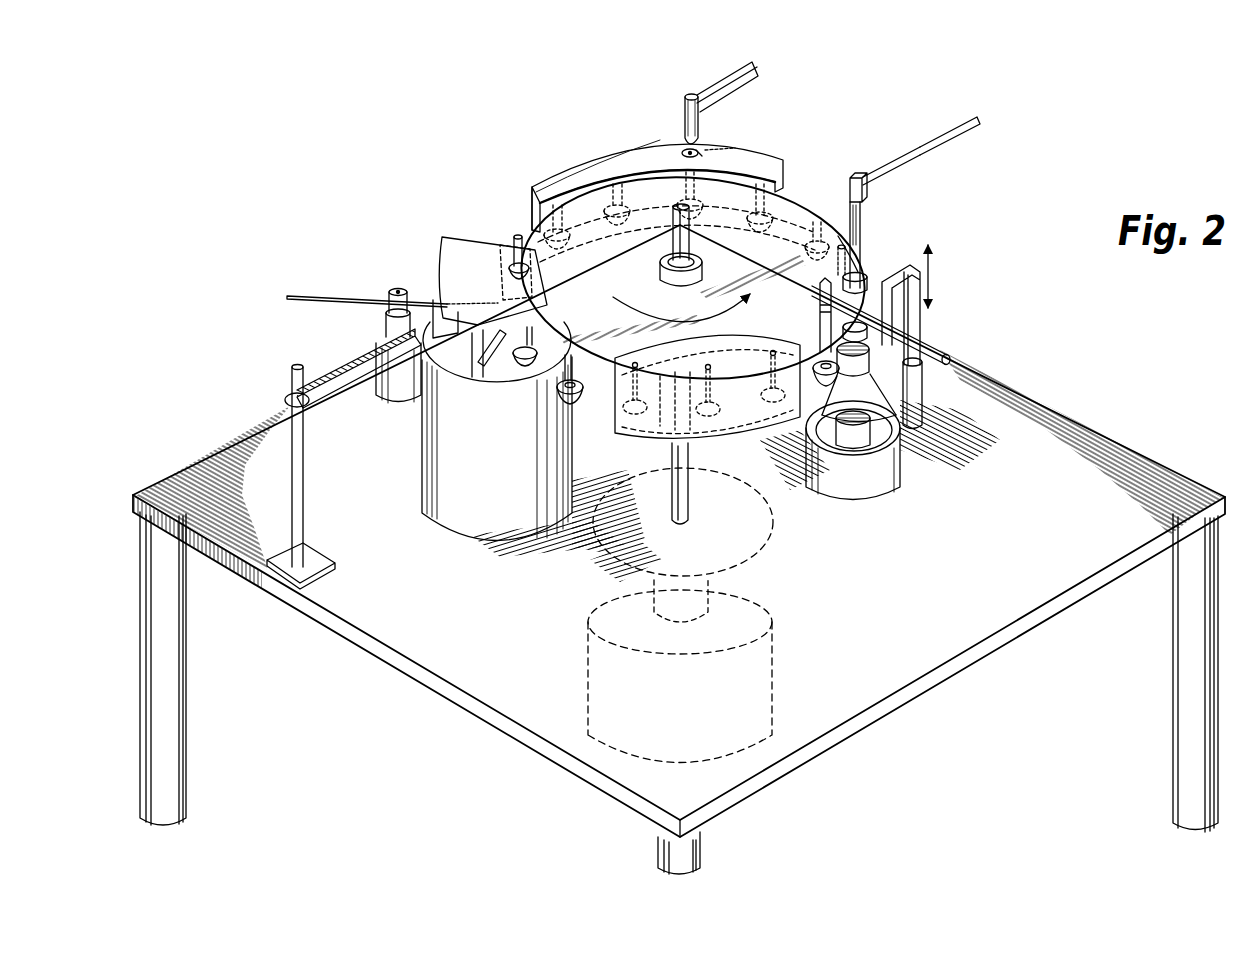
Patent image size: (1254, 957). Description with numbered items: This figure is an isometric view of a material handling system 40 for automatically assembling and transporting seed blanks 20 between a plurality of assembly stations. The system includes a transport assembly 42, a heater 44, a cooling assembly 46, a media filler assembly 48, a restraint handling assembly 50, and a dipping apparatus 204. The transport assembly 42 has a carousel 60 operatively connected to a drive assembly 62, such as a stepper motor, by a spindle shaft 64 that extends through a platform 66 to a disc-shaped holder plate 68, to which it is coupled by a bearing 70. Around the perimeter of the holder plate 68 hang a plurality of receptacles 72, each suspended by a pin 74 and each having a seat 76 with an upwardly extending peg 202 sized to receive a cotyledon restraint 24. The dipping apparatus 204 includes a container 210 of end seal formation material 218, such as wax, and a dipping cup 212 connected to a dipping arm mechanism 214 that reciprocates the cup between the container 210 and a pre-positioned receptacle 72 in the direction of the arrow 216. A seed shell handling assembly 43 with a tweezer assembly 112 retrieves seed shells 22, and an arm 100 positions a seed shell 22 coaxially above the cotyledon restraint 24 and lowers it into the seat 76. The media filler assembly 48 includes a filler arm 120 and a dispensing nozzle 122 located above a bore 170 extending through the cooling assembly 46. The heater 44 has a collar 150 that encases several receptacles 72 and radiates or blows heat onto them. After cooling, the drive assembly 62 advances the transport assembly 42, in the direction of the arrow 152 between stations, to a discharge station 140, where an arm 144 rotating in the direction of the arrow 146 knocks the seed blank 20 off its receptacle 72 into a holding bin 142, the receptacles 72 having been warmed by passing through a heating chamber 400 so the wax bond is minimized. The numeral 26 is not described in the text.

The seed blank 20 is at (477, 387).
The seed shell 22 is at (862, 233).
The cotyledon restraint 24 is at (819, 327).
The dispensing opening 26 is at (684, 148).
The material handling system 40 is at (549, 153).
The transport assembly 42 is at (797, 190).
The seed shell handling assembly 43 is at (880, 160).
The heater 44 is at (660, 445).
The cooling assembly 46 is at (637, 143).
The media filler assembly 48 is at (713, 80).
The restraint handling assembly 50 is at (937, 367).
The carousel 60 is at (527, 227).
The drive assembly 62 is at (780, 680).
The spindle shaft 64 is at (688, 493).
The platform 66 is at (1024, 632).
The holder plate 68 is at (797, 207).
The bearing 70 is at (699, 263).
The receptacle 72 is at (576, 405).
The pin 74 is at (585, 375).
The seat 76 is at (637, 412).
The arm 100 is at (947, 127).
The tweezer assembly 112 is at (870, 189).
The filler arm 120 is at (748, 83).
The dispensing nozzle 122 is at (700, 147).
The discharge station 140 is at (410, 440).
The holding bin 142 is at (425, 490).
The arm 144 is at (315, 292).
The arrow 146 is at (421, 312).
The collar 150 is at (727, 435).
The arrow 152 is at (678, 316).
The bore 170 is at (714, 144).
The peg 202 is at (513, 357).
The dipping apparatus 204 is at (937, 327).
The container 210 is at (857, 497).
The dipping cup 212 is at (869, 382).
The dipping arm mechanism 214 is at (902, 267).
The arrow 216 is at (930, 273).
The end seal formation material 218 is at (913, 351).
The heating chamber 400 is at (511, 247).